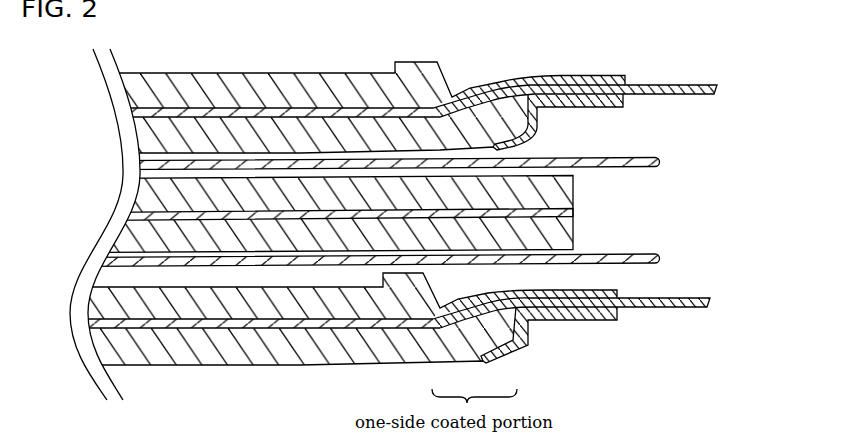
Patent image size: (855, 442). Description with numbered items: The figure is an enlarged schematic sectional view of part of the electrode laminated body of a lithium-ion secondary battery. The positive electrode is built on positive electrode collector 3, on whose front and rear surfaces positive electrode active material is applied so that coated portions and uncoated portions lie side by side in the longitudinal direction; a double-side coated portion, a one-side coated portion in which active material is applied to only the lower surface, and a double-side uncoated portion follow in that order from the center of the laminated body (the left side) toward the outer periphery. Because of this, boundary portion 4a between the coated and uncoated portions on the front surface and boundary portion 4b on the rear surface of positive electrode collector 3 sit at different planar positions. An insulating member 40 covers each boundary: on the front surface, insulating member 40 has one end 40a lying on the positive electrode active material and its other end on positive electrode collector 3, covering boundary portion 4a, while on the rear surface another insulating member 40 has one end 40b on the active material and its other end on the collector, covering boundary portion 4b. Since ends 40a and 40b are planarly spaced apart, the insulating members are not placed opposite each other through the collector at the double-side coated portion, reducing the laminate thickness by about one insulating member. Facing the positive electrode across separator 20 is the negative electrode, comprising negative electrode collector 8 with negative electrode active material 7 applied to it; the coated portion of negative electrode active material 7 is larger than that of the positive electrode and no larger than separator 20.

The positive electrode collector 3 is at (388, 343).
The boundary portion 4a is at (455, 290).
The boundary portion 4b is at (348, 370).
The insulating member 40 is at (385, 345).
The one end of insulating member 40a is at (384, 284).
The one end of insulating member 40b is at (488, 363).
The negative electrode active material 7 is at (562, 231).
The negative electrode collector 8 is at (562, 212).
The separator 20 is at (650, 251).